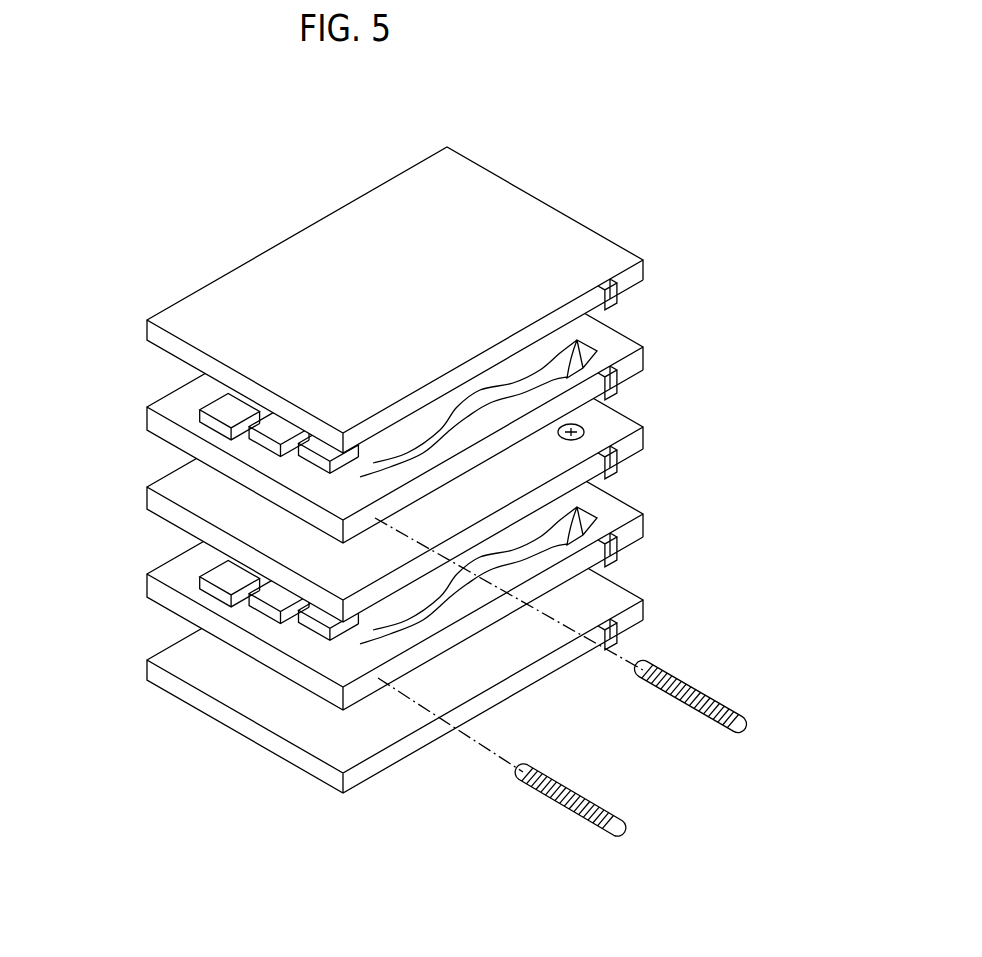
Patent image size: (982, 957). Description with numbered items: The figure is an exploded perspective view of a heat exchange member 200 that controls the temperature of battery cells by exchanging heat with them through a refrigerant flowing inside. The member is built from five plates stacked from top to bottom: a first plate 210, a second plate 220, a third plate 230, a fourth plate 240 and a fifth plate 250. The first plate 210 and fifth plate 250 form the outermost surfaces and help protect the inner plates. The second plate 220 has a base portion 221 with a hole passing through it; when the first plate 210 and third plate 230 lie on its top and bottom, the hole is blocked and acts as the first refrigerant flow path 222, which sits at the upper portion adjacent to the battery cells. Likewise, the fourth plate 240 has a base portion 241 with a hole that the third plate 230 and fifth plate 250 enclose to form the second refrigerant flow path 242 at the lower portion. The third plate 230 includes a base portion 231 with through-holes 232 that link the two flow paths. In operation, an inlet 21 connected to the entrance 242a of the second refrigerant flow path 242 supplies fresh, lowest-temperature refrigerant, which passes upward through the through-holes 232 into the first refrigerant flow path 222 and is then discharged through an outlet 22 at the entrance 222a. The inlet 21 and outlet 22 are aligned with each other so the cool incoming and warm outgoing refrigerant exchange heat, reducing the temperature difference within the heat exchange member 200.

The heat exchange member 200 is at (215, 152).
The first plate 210 is at (200, 277).
The second plate 220 is at (138, 413).
The base portion 221 is at (205, 380).
The first refrigerant flow path 222 is at (200, 382).
The entrance of the first refrigerant flow path 222a is at (597, 480).
The third plate 230 is at (142, 490).
The base portion 231 is at (620, 427).
The through-holes 232 is at (578, 425).
The fourth plate 240 is at (140, 583).
The base portion 241 is at (205, 553).
The second refrigerant flow path 242 is at (198, 572).
The entrance of the second refrigerant flow path 242a is at (440, 700).
The fifth plate 250 is at (140, 668).
The inlet 21 is at (577, 812).
The outlet 22 is at (693, 698).